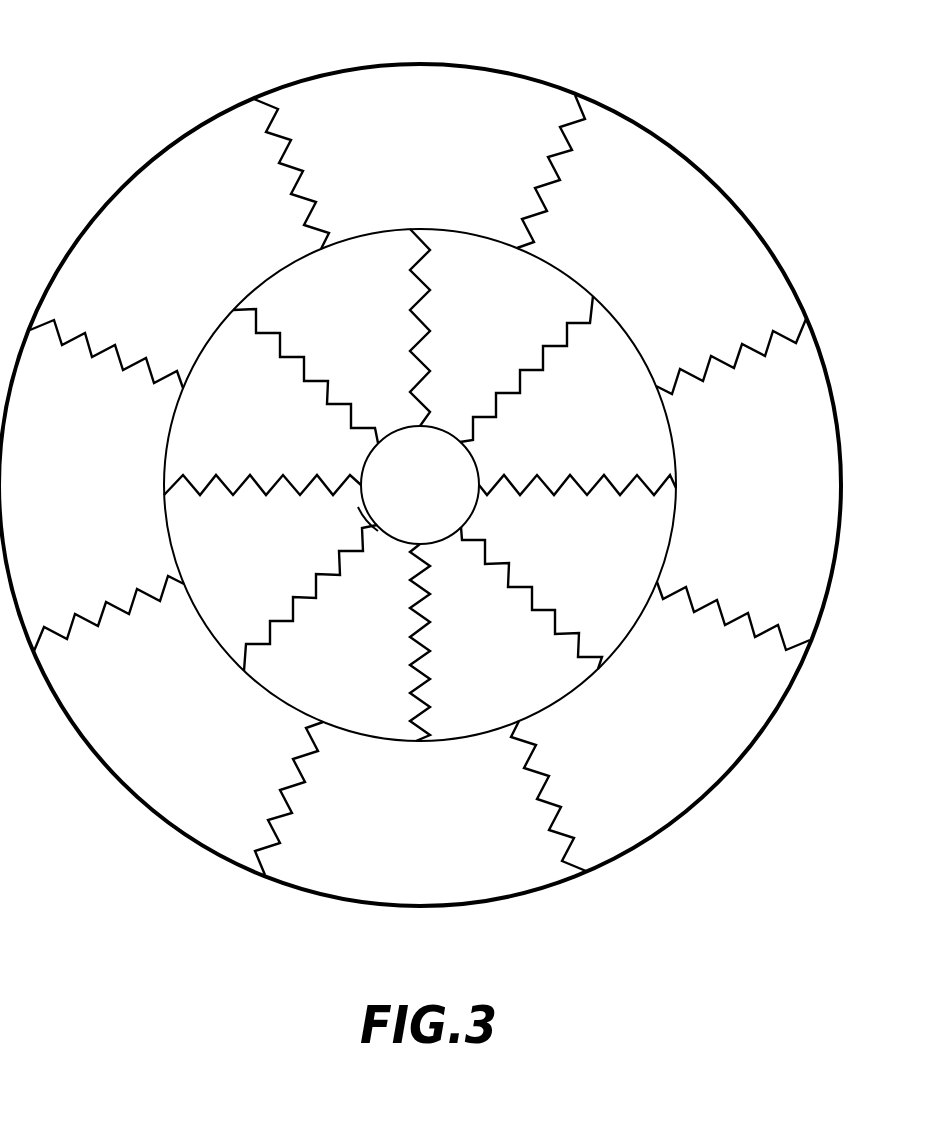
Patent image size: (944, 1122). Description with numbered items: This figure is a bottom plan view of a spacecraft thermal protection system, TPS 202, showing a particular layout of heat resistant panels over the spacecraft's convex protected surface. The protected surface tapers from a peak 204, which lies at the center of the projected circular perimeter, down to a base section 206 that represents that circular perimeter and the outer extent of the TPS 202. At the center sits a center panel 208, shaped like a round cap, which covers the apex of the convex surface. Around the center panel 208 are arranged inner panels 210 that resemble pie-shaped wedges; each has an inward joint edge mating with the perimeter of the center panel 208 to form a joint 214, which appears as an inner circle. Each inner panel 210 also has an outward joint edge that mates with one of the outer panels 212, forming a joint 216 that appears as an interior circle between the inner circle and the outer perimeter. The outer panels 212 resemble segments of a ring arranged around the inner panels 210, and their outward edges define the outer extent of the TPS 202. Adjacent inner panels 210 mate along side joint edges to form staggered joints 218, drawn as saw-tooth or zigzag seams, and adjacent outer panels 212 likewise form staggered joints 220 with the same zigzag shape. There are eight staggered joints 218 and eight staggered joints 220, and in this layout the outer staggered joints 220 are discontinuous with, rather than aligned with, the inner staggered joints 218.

The thermal protection system (TPS) 202 is at (161, 94).
The peak 204 is at (425, 502).
The base section 206 is at (667, 139).
The center panel 208 is at (442, 477).
The inner panels 210 is at (379, 330).
The outer panels 212 is at (465, 144).
The joint 214 is at (360, 506).
The joint 216 is at (562, 270).
The staggered joint 218 is at (418, 264).
The staggered joint 220 is at (284, 128).